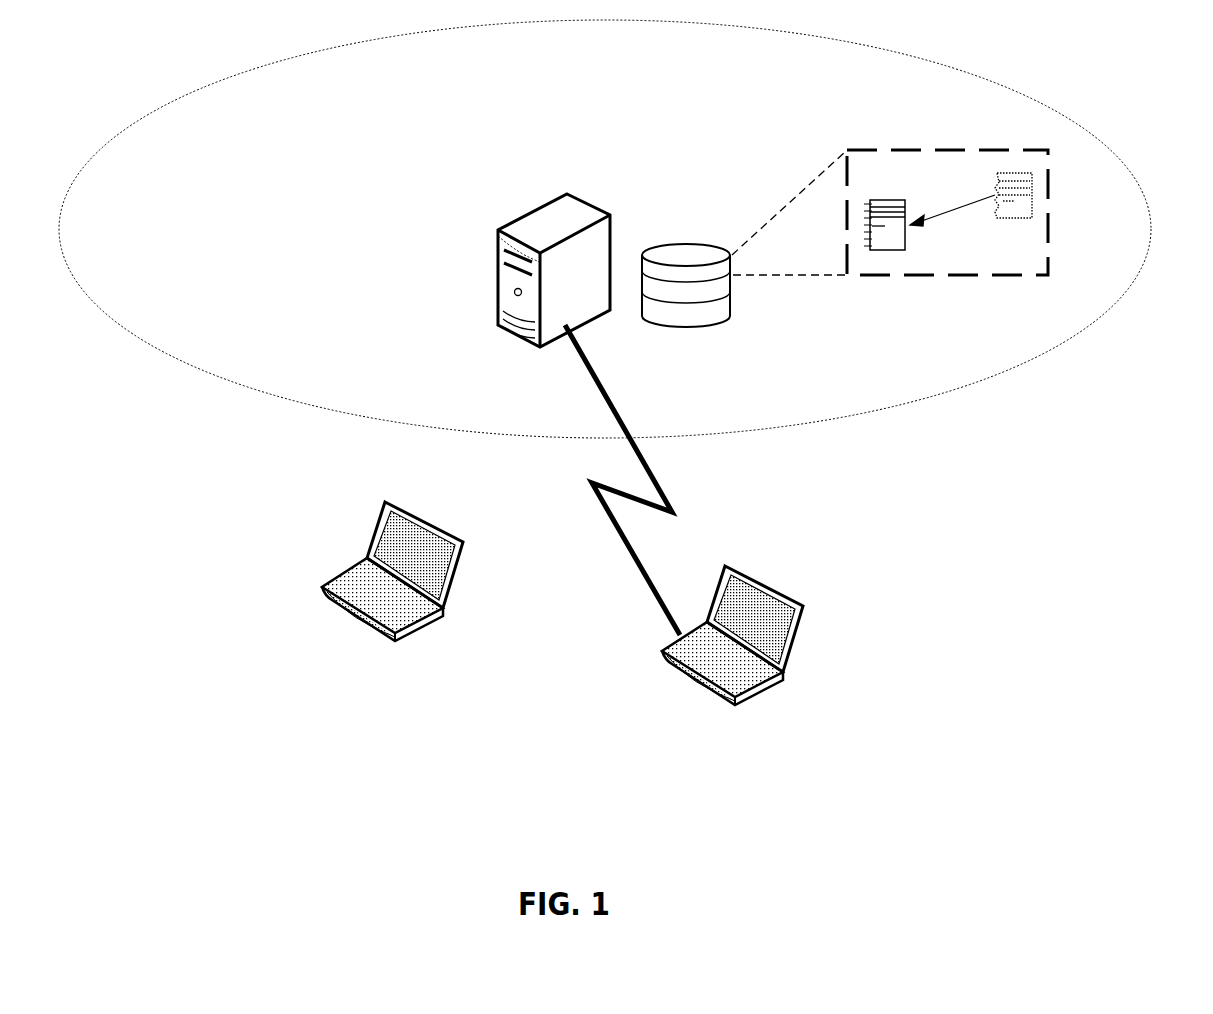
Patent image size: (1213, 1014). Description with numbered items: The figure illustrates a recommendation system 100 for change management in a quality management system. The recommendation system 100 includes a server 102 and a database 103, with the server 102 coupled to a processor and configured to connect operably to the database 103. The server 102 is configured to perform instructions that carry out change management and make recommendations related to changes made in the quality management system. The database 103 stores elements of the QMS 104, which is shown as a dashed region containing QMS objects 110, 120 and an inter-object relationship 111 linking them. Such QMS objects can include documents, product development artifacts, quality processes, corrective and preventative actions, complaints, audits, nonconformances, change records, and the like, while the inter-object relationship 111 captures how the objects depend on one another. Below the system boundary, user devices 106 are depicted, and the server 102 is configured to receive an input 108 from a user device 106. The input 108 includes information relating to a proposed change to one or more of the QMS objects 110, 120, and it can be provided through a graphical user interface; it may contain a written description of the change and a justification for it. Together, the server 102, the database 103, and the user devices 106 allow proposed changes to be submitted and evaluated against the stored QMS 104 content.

The recommendation system 100 is at (1120, 158).
The server 102 is at (500, 283).
The database 103 is at (688, 256).
The QMS 104 is at (948, 150).
The user device 106 is at (368, 630).
The input 108 is at (635, 452).
The QMS object 110 is at (892, 236).
The inter-object relationship 111 is at (952, 215).
The QMS object 120 is at (1022, 208).